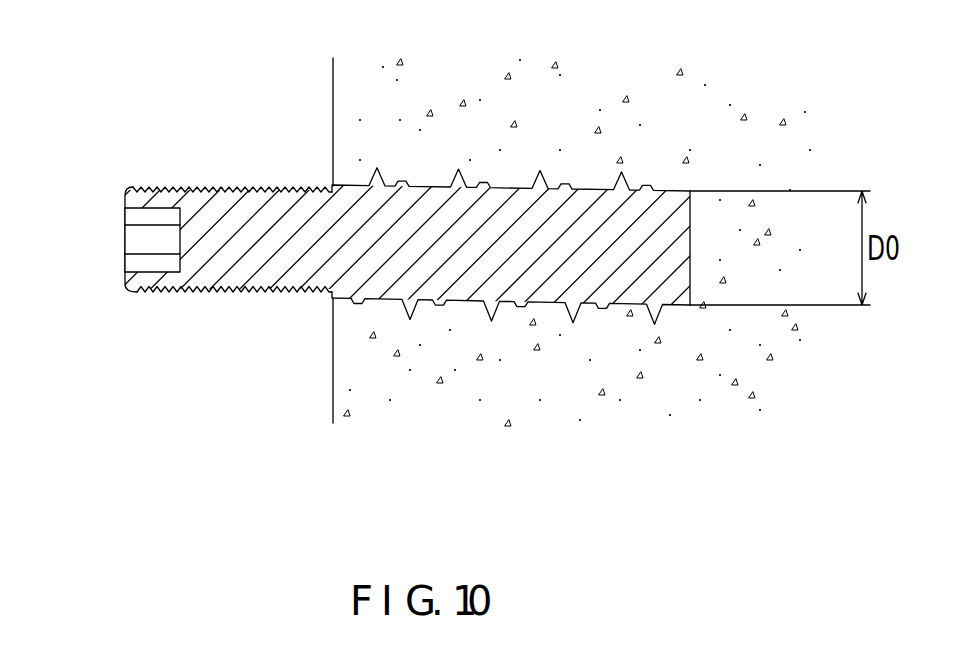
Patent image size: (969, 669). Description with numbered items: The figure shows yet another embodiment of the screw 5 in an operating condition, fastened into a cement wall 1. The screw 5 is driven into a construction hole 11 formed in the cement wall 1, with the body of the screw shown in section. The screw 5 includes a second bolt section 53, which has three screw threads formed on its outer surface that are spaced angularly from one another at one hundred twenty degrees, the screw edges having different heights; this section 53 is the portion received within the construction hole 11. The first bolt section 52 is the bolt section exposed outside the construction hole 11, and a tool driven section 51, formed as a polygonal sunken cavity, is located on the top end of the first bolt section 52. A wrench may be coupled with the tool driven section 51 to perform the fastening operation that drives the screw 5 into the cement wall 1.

The cement wall 1 is at (345, 77).
The screw 5 is at (413, 275).
The tool driven section 51 is at (132, 242).
The first bolt section 52 is at (240, 295).
The second bolt section 53 is at (547, 270).
The construction hole 11 is at (387, 314).